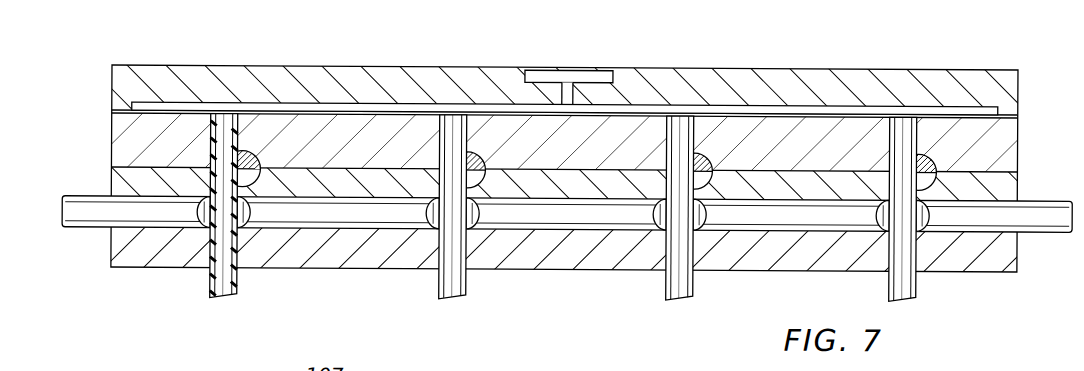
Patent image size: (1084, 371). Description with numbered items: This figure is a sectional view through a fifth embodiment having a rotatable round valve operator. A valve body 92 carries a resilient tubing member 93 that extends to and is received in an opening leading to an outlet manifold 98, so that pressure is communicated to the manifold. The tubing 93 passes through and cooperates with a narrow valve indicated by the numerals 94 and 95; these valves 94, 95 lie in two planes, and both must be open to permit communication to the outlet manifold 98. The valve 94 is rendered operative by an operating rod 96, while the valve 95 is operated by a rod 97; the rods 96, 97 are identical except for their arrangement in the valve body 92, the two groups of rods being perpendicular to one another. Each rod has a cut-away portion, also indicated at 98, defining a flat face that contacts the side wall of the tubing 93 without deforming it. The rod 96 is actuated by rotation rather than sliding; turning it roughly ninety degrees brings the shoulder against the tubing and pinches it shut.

The valve body 92 is at (112, 79).
The tubing member 93 is at (238, 287).
The valve 94 is at (200, 237).
The valve 95 is at (272, 148).
The operating rod 96 is at (83, 196).
The rod 97 is at (247, 150).
The outlet manifold 98 is at (375, 108).